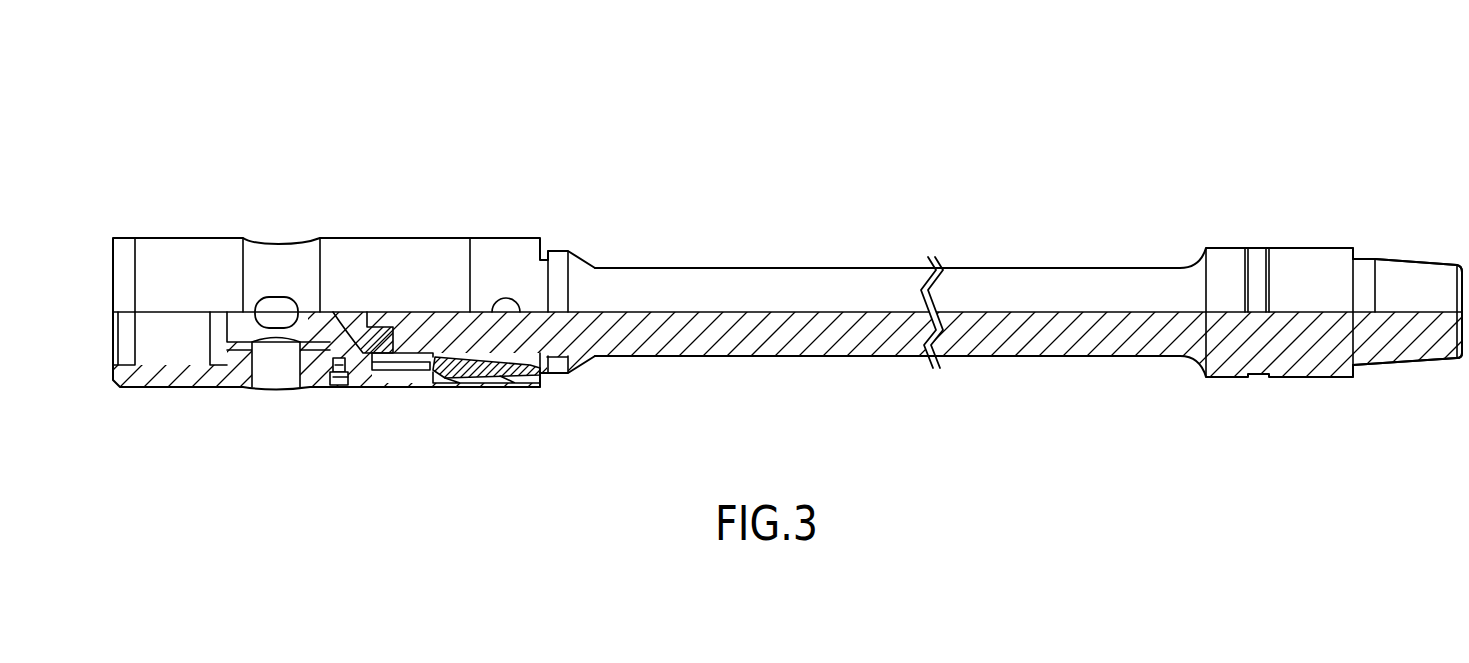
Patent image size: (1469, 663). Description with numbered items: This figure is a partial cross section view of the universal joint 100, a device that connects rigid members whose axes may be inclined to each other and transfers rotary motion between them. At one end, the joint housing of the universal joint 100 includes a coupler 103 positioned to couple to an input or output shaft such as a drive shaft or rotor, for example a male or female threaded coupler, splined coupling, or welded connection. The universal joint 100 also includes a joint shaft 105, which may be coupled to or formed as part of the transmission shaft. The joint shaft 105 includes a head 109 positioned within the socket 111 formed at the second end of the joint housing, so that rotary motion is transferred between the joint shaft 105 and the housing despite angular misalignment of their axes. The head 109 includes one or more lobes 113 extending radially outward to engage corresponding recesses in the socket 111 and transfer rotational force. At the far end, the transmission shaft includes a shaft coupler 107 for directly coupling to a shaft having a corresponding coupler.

The universal joint 100 is at (232, 127).
The coupler 103 is at (176, 336).
The joint shaft 105 is at (795, 268).
The shaft coupler 107 is at (1427, 255).
The head 109 is at (548, 403).
The socket 111 is at (555, 392).
The lobe 113 is at (377, 352).